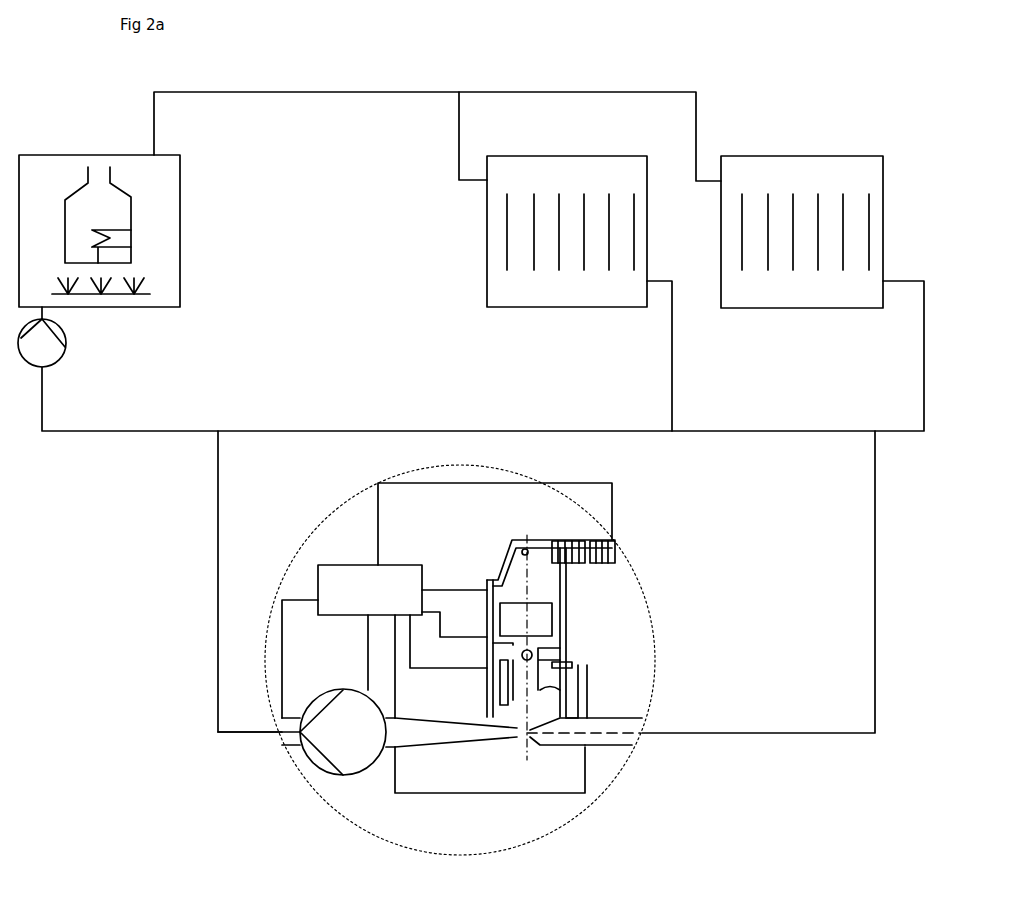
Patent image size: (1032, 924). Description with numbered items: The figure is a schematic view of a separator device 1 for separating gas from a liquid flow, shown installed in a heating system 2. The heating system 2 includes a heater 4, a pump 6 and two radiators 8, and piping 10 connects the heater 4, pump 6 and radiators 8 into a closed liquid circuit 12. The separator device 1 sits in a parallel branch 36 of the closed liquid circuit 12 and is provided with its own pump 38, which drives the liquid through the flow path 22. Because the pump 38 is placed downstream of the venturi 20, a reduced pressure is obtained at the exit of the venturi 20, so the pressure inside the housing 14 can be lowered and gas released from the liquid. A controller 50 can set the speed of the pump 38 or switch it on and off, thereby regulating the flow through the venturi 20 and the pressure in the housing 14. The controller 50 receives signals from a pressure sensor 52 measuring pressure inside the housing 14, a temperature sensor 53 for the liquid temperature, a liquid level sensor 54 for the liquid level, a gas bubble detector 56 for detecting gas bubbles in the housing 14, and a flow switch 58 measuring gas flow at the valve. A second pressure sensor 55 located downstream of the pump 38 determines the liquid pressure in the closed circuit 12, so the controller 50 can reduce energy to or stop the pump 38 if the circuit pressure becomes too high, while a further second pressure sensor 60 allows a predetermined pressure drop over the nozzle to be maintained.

The separator device 1 is at (495, 543).
The heating system 2 is at (792, 138).
The heater 4 is at (62, 155).
The pump 6 is at (62, 345).
The radiators 8 is at (487, 245).
The piping 10 is at (146, 431).
The closed liquid circuit 12 is at (586, 92).
The housing 14 is at (566, 576).
The venturi 20 is at (530, 741).
The flow path 22 is at (555, 745).
The parallel branch 36 is at (875, 560).
The pump 38 is at (350, 691).
The controller 50 is at (433, 679).
The pressure sensor 52 is at (513, 588).
The temperature sensor 53 is at (497, 642).
The liquid level sensor 54 is at (500, 680).
The second pressure sensor 55 is at (280, 733).
The gas bubble detector 56 is at (534, 656).
The flow switch 58 is at (613, 546).
The second pressure sensor 60 is at (583, 738).